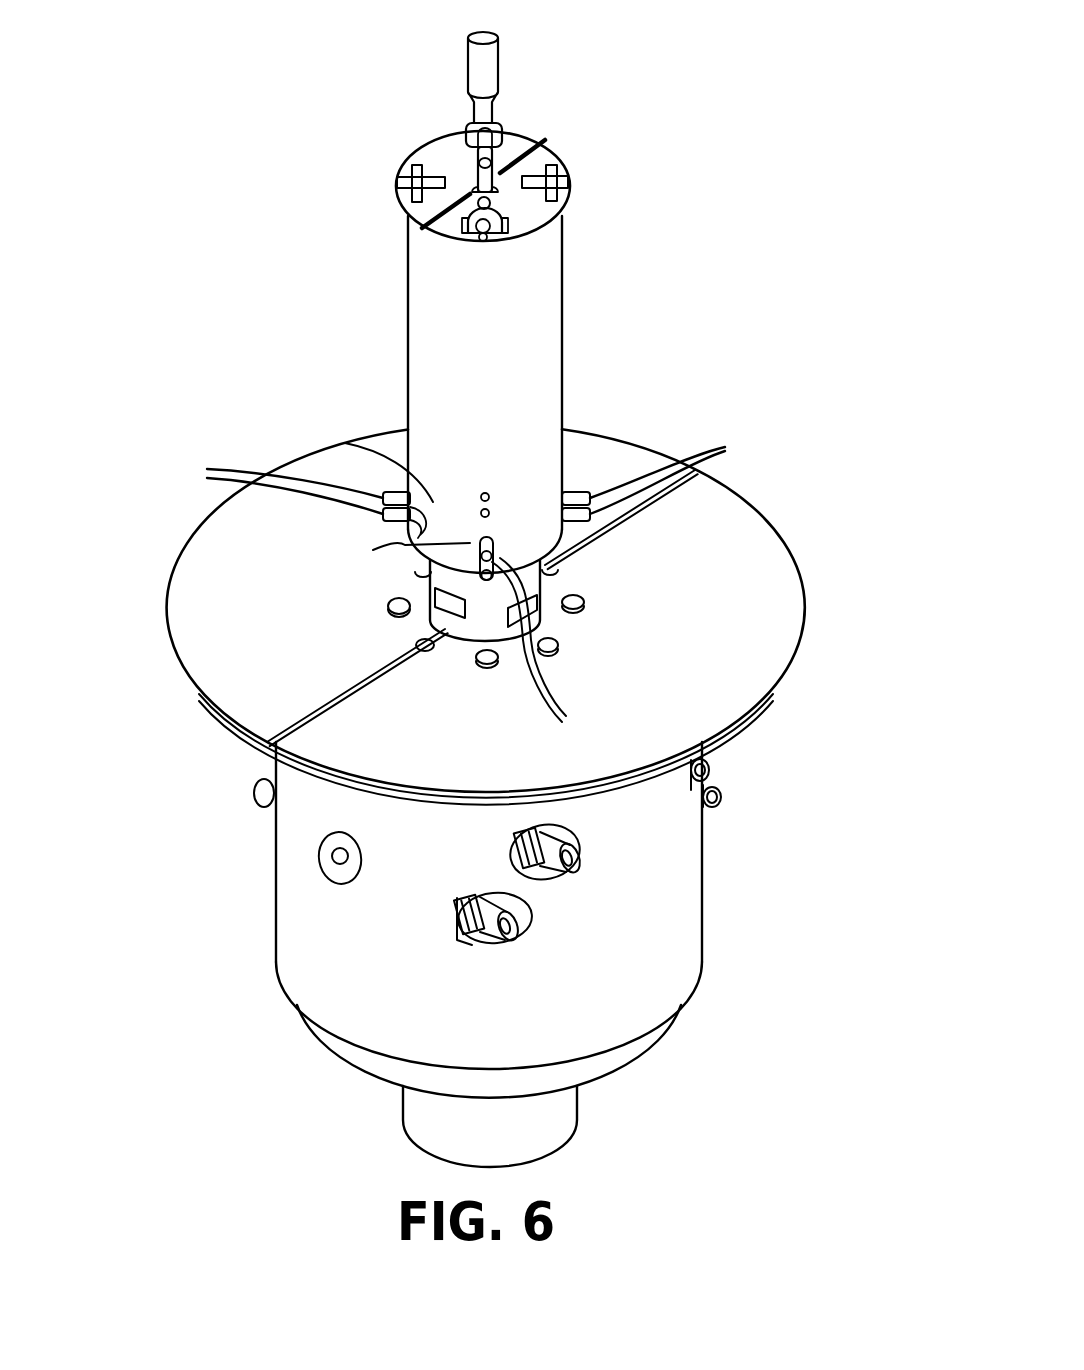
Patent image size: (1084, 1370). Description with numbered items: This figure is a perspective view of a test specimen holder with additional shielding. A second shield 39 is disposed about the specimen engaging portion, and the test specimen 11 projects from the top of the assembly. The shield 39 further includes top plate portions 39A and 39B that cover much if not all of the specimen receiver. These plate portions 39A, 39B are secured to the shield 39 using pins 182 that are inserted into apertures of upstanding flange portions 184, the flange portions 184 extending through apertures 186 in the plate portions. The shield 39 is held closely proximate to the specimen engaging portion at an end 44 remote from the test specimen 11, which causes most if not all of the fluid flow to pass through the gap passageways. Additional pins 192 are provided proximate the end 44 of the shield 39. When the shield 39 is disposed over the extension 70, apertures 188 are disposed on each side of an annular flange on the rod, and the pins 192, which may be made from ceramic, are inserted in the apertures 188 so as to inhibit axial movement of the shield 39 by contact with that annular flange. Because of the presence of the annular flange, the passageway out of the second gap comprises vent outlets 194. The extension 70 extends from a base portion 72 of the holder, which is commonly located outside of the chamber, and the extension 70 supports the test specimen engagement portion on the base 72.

The test specimen 11 is at (503, 63).
The second shield 39 is at (563, 367).
The top plate portion 39A is at (523, 212).
The top plate portion 39B is at (435, 156).
The end 44 is at (408, 431).
The extension 70 is at (545, 592).
The base portion 72 is at (764, 840).
The pin 182 is at (567, 178).
The upstanding flange portion 184 is at (548, 165).
The aperture 186 is at (435, 157).
The aperture 188 is at (392, 542).
The pin 192 is at (463, 586).
The vent outlet 194 is at (487, 494).